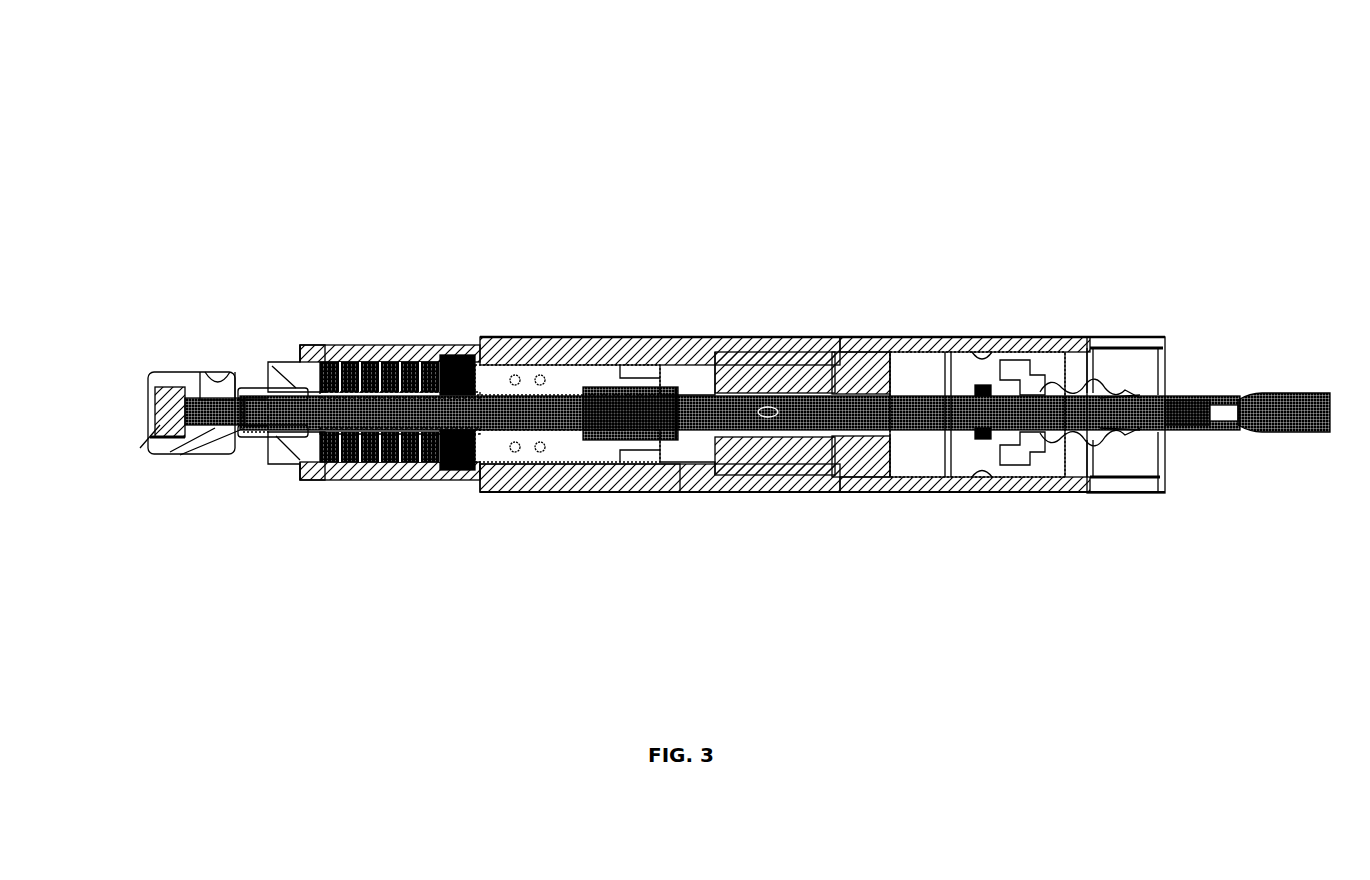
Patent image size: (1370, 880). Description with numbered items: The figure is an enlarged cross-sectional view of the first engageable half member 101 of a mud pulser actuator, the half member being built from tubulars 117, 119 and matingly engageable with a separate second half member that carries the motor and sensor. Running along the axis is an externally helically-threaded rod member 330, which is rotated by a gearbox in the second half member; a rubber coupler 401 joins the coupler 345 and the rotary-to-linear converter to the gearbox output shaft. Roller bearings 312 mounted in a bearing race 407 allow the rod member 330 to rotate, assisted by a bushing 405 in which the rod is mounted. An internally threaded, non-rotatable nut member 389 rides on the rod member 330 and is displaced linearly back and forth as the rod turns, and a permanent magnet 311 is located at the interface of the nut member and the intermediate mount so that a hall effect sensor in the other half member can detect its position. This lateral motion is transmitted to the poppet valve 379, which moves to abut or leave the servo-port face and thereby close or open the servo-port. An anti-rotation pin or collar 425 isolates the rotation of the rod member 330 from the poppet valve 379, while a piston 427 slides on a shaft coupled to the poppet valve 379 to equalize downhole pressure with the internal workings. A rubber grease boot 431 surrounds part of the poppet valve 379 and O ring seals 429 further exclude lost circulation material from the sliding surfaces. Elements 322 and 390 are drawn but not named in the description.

The first engageable half member 101 is at (307, 195).
The tubular 117 is at (548, 486).
The tubular 119 is at (1128, 337).
The permanent magnet 311 is at (478, 338).
The roller bearings 312 is at (332, 462).
The guide sleeve 322 is at (405, 462).
The externally helically-threaded rod member 330 is at (575, 337).
The coupler 345 is at (170, 455).
The poppet valve 379 is at (1326, 395).
The nut member 389 is at (362, 352).
The spring seat 390 is at (452, 358).
The rubber coupler 401 is at (150, 445).
The bushing 405 is at (262, 440).
The bearing race 407 is at (290, 358).
The anti-rotation pin or collar 425 is at (765, 410).
The piston 427 is at (957, 348).
The O ring seals 429 is at (985, 437).
The rubber grease boot 431 is at (1150, 485).